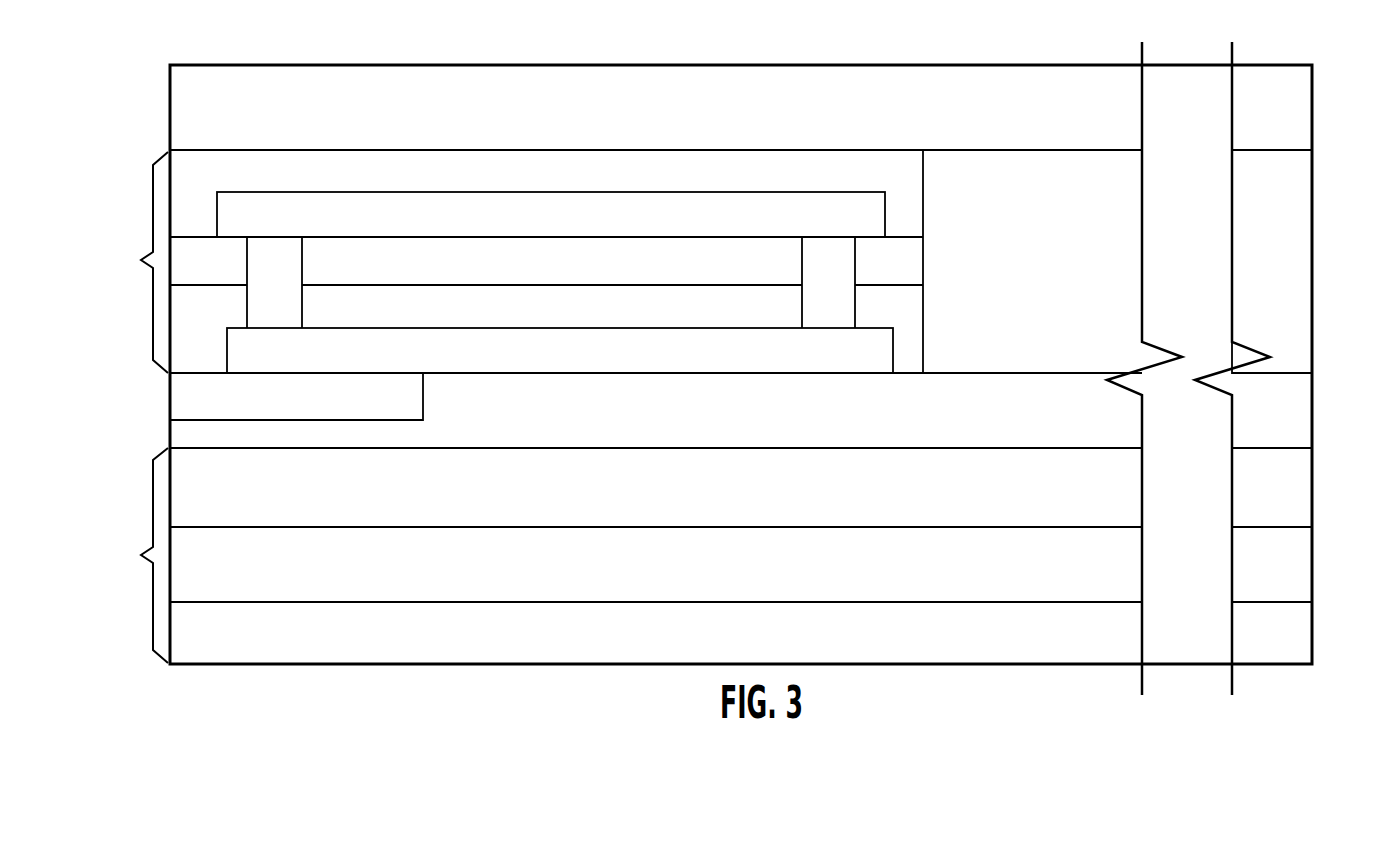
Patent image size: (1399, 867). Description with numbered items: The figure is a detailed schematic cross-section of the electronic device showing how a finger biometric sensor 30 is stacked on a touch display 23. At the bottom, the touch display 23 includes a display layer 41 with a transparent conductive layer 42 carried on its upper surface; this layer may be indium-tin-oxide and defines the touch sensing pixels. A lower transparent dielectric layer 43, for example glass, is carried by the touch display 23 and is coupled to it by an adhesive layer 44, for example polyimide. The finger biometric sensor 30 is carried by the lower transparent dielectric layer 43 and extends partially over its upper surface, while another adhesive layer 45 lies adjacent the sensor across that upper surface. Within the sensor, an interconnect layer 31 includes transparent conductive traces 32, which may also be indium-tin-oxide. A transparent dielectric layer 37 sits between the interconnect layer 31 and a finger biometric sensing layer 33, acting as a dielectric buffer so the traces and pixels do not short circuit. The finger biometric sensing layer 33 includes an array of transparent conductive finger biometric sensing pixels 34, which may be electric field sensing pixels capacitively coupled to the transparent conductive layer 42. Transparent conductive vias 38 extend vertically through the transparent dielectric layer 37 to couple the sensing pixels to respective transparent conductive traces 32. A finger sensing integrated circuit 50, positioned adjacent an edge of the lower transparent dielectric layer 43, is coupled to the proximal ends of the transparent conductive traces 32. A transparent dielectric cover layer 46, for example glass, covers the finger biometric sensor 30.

The touch display 23 is at (140, 555).
The finger biometric sensor 30 is at (407, 262).
The interconnect layer 31 is at (195, 343).
The transparent conductive traces 32 is at (872, 347).
The finger biometric sensing layer 33 is at (211, 163).
The array of transparent conductive finger biometric sensing pixels 34 is at (877, 197).
The transparent dielectric layer 37 is at (847, 268).
The transparent conductive vias 38 is at (268, 273).
The display layer 41 is at (1312, 635).
The transparent conductive layer 42 is at (1312, 562).
The lower transparent dielectric layer 43 is at (1312, 402).
The adhesive layer 44 is at (1312, 485).
The adhesive layer 45 is at (1312, 190).
The transparent dielectric cover layer 46 is at (1296, 93).
The finger sensing integrated circuit 50 is at (184, 410).